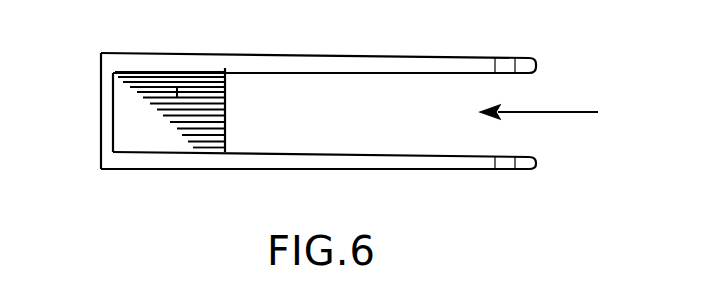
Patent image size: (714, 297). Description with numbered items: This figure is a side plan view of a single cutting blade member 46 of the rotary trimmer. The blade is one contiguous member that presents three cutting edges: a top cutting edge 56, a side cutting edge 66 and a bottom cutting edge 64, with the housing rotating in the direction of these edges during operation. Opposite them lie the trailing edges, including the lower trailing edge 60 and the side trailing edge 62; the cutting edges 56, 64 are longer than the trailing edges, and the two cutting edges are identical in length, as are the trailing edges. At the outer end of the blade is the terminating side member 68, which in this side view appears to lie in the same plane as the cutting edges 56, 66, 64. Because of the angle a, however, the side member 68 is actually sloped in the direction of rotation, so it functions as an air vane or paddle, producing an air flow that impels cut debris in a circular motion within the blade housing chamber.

The cutting blade member 46 is at (560, 113).
The top cutting edge 56 is at (305, 57).
The lower trailing edge 60 is at (391, 140).
The side trailing edge 62 is at (225, 130).
The bottom cutting edge 64 is at (310, 168).
The side cutting edge 66 is at (101, 105).
The terminating side member 68 is at (177, 92).